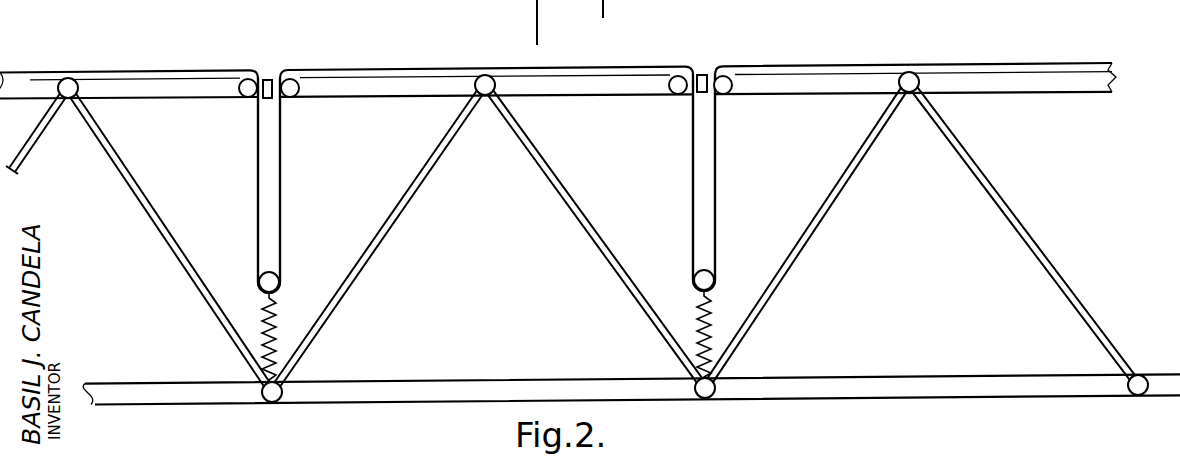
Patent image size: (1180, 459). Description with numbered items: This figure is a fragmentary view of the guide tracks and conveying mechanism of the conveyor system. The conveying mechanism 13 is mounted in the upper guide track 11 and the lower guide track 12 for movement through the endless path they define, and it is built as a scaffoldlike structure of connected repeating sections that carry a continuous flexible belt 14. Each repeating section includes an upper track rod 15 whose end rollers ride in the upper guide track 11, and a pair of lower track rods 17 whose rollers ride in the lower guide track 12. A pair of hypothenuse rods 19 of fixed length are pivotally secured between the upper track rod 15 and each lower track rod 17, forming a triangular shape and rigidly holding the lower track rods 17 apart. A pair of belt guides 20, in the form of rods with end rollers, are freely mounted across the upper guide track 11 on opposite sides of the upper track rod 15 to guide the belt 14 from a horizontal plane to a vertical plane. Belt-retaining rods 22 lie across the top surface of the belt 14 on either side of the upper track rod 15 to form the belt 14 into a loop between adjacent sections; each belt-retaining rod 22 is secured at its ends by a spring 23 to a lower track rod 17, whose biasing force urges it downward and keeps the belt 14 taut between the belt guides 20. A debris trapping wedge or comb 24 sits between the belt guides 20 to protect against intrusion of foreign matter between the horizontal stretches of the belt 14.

The upper guide track 11 is at (1106, 82).
The lower guide track 12 is at (955, 380).
The conveying mechanism 13 is at (1095, 171).
The flexible belt 14 is at (611, 67).
The upper track rod 15 is at (490, 78).
The lower track rod 17 is at (271, 404).
The hypothenuse rod 19 is at (127, 174).
The belt guide 20 is at (248, 98).
The belt-retaining rod 22 is at (276, 271).
The spring 23 is at (273, 322).
The debris trapping wedge or comb 24 is at (270, 74).